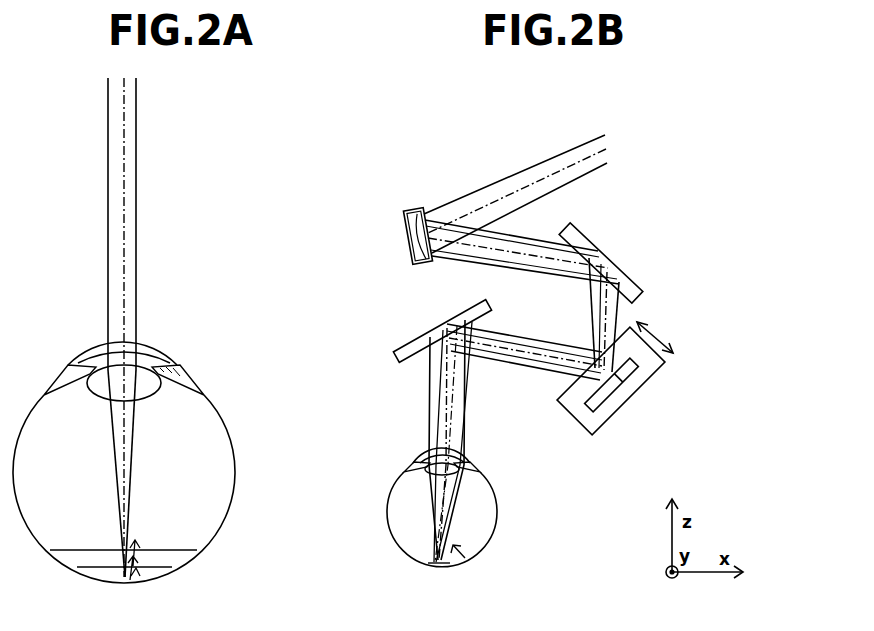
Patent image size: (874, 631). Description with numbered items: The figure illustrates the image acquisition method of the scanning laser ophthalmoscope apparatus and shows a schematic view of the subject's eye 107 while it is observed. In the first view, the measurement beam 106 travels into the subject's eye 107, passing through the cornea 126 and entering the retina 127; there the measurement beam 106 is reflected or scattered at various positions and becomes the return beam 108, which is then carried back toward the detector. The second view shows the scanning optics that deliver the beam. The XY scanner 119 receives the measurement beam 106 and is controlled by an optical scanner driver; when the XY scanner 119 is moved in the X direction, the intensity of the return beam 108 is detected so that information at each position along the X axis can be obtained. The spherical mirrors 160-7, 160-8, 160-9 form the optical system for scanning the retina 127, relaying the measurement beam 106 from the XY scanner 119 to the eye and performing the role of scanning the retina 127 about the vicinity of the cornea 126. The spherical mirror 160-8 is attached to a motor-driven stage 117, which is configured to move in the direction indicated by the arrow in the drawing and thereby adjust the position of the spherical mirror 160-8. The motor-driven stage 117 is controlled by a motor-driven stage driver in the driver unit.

In FIG. 2A, the measurement beam 106 is at (137, 98).
In FIG. 2B, the measurement beam 106 is at (491, 189).
In FIG. 2A, the subject's eye 107 is at (236, 458).
In FIG. 2B, the subject's eye 107 is at (498, 505).
In FIG. 2A, the return beam 108 is at (173, 567).
In FIG. 2B, the return beam 108 is at (470, 553).
In FIG. 2B, the motor-driven stage 117 is at (655, 373).
In FIG. 2B, the XY scanner 119 is at (398, 236).
In FIG. 2A, the cornea 126 is at (175, 360).
In FIG. 2B, the cornea 126 is at (470, 460).
In FIG. 2A, the retina 127 is at (197, 549).
In FIG. 2B, the retina 127 is at (440, 566).
In FIG. 2B, the spherical mirror 160-7 is at (613, 263).
In FIG. 2B, the spherical mirror 160-8 is at (617, 408).
In FIG. 2B, the spherical mirror 160-9 is at (431, 331).